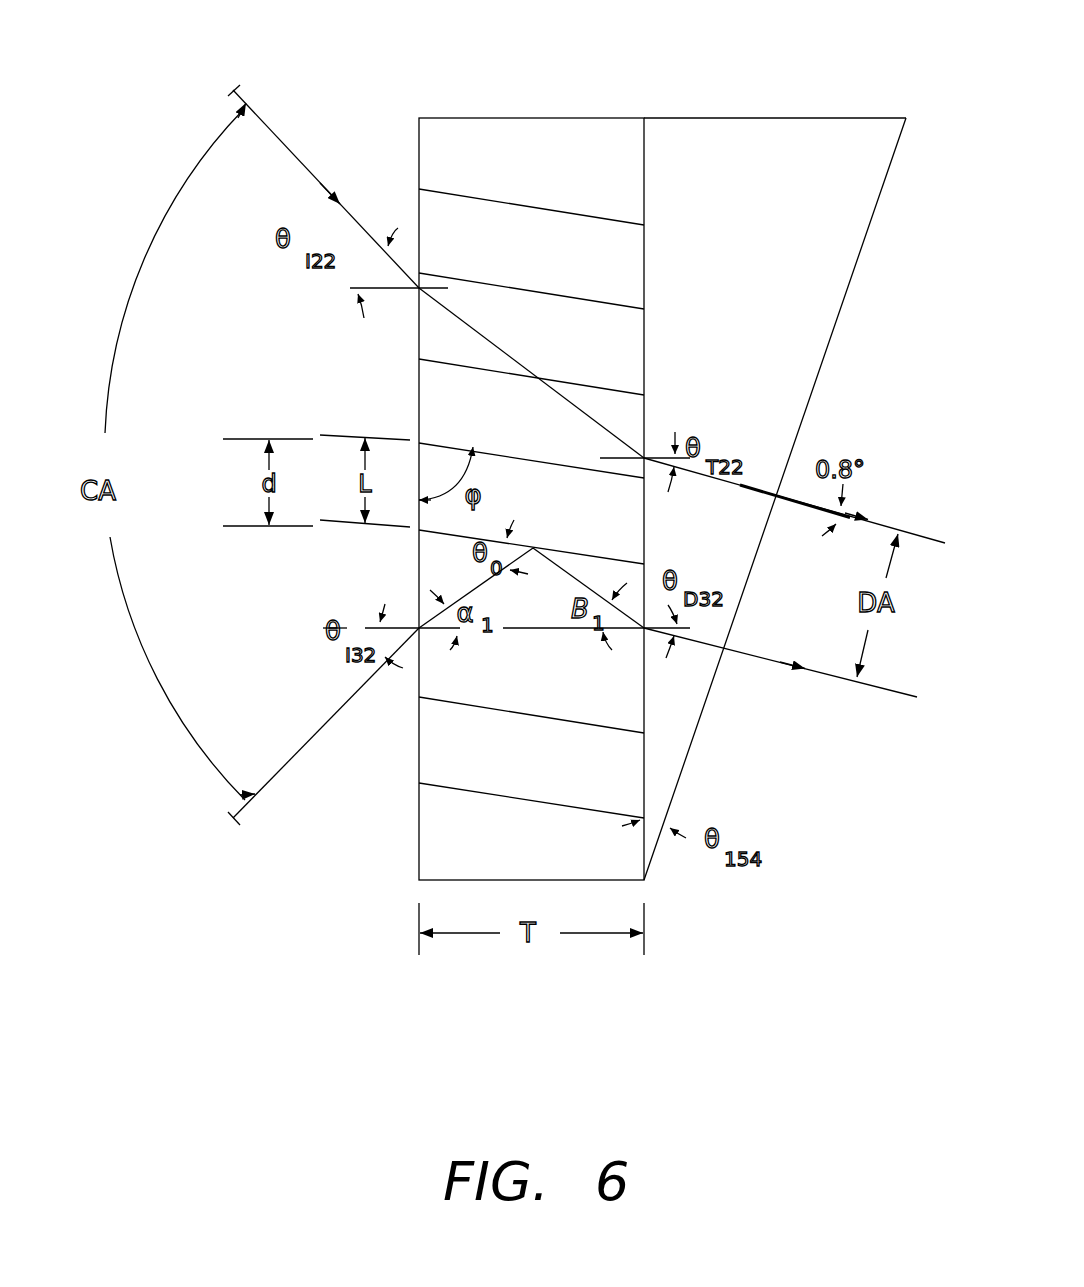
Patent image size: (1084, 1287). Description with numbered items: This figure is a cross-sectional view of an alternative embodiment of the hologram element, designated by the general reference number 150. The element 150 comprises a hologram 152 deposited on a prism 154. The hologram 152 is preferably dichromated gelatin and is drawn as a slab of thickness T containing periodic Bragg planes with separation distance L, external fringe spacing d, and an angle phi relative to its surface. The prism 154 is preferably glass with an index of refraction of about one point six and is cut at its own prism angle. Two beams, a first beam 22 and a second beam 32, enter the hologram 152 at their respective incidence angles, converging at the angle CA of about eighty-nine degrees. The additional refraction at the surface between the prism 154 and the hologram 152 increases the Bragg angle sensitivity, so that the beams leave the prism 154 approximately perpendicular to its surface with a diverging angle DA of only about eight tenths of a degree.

The first beam 22 is at (236, 94).
The second beam 32 is at (237, 812).
The hologram element 150 is at (371, 1044).
The hologram 152 is at (512, 118).
The prism 154 is at (784, 118).